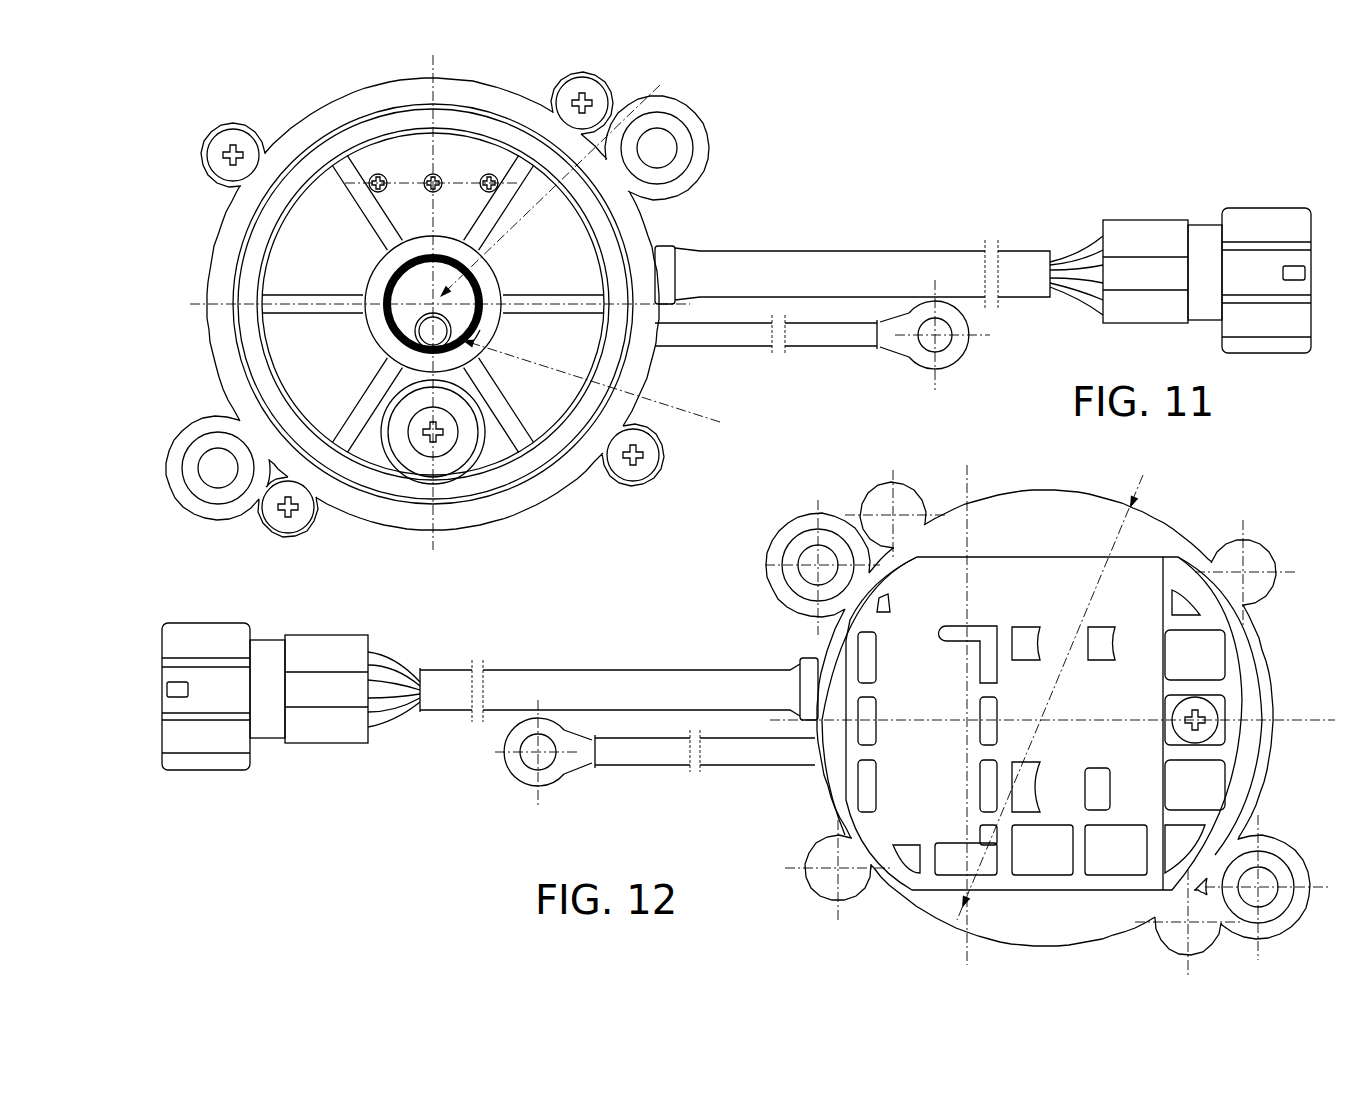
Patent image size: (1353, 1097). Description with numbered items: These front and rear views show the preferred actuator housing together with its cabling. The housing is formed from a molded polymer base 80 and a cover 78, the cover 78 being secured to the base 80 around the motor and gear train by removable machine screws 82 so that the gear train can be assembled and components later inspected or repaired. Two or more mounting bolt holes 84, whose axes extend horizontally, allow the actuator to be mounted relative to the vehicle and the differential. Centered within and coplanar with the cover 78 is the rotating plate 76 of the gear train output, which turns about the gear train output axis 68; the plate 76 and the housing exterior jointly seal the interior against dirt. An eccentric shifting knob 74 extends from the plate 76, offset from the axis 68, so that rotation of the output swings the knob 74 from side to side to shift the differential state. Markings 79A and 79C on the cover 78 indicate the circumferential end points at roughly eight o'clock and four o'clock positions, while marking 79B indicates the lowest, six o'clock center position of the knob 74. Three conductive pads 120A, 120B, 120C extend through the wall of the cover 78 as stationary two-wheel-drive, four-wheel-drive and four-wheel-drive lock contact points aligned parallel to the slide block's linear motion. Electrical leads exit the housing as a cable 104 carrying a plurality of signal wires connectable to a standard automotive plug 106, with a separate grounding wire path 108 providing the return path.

In FIG. 11, the gear train output axis 68 is at (568, 176).
In FIG. 11, the shifting knob 74 is at (608, 392).
In FIG. 11, the rotating plate 76 is at (403, 287).
In FIG. 11, the housing cover 78 is at (578, 270).
In FIG. 11, the marking 79A is at (380, 336).
In FIG. 11, the marking 79B is at (483, 425).
In FIG. 11, the marking 79C is at (493, 336).
In FIG. 11, the base 80 is at (210, 513).
In FIG. 12, the base 80 is at (1030, 506).
In FIG. 11, the machine screws 82 is at (222, 140).
In FIG. 11, the mounting bolt holes 84 is at (662, 148).
In FIG. 12, the mounting bolt holes 84 is at (818, 560).
In FIG. 11, the cable 104 is at (876, 270).
In FIG. 12, the cable 104 is at (570, 690).
In FIG. 11, the automotive plug 106 is at (1262, 222).
In FIG. 12, the automotive plug 106 is at (228, 633).
In FIG. 11, the grounding wire path 108 is at (822, 318).
In FIG. 12, the grounding wire path 108 is at (650, 752).
In FIG. 11, the conductive pad 120A is at (366, 170).
In FIG. 11, the conductive pad 120B is at (434, 176).
In FIG. 11, the conductive pad 120C is at (489, 176).